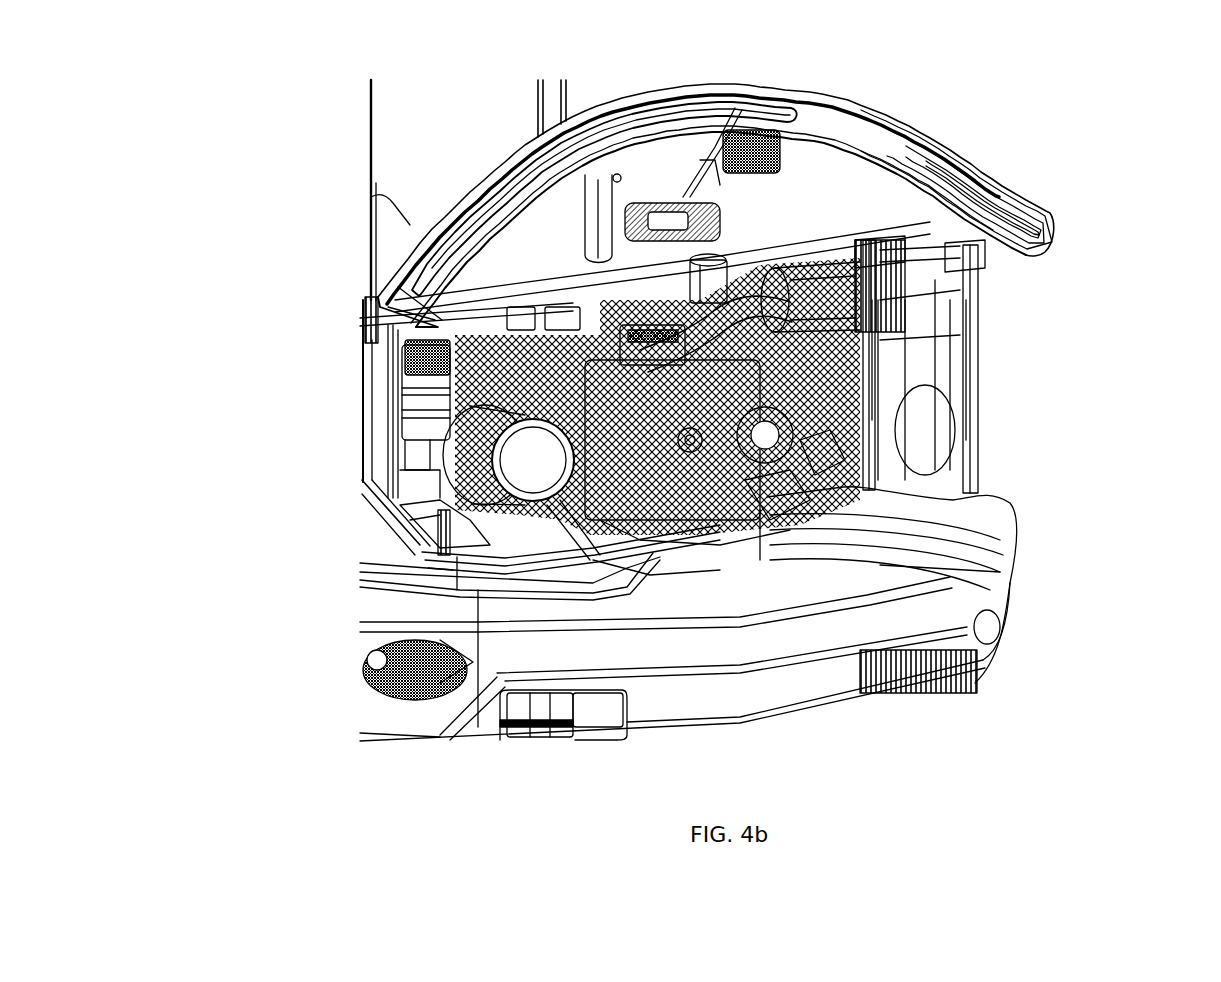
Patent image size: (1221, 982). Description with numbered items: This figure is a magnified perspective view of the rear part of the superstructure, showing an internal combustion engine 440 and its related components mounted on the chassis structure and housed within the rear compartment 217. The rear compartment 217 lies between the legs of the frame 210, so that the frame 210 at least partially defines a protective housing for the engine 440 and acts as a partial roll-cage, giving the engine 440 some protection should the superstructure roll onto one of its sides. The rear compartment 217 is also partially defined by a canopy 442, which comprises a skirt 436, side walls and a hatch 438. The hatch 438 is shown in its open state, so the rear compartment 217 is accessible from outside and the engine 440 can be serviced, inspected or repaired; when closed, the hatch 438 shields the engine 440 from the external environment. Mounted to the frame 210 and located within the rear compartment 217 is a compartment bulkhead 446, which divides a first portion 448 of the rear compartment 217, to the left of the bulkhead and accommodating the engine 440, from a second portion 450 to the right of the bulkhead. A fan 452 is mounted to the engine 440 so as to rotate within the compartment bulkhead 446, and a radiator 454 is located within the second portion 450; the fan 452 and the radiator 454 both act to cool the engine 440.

The frame 210 is at (377, 420).
The rear compartment 217 is at (775, 504).
The skirt 436 is at (427, 605).
The hatch 438 is at (1040, 218).
The internal combustion engine 440 is at (565, 511).
The canopy 442 is at (1023, 470).
The compartment bulkhead 446 is at (873, 413).
The first portion 448 is at (411, 529).
The second portion 450 is at (967, 428).
The fan 452 is at (803, 474).
The radiator 454 is at (885, 460).